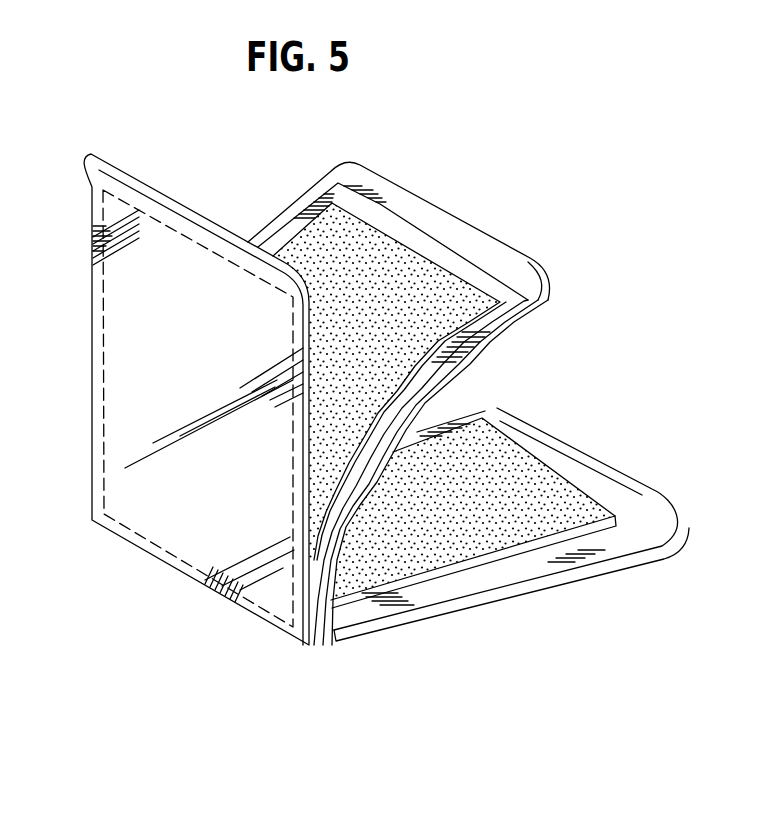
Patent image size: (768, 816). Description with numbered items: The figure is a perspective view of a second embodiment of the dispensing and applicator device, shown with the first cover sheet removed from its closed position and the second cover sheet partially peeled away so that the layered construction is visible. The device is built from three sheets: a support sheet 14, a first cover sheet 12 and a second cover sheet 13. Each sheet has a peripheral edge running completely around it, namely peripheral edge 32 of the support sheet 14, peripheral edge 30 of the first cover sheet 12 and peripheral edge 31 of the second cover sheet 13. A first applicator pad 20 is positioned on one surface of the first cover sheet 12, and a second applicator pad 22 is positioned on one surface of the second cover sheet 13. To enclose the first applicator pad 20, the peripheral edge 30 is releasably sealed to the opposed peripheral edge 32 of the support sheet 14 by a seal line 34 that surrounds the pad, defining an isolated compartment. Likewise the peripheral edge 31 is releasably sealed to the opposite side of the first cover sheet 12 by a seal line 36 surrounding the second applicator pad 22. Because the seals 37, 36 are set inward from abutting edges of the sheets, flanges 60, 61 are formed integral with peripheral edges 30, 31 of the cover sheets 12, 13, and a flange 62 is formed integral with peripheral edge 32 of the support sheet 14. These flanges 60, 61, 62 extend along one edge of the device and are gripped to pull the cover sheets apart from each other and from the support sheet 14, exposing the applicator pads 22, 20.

The first cover sheet 12 is at (351, 160).
The second cover sheet 13 is at (648, 497).
The support sheet 14 is at (127, 383).
The first applicator pad 20 is at (441, 276).
The second applicator pad 22 is at (500, 480).
The peripheral edge 30 is at (280, 222).
The peripheral edge 31 is at (588, 467).
The peripheral edge 32 is at (117, 298).
The seal line 34 is at (488, 271).
The seal line 36 is at (452, 425).
The seal 37 is at (396, 210).
The flange 60 is at (441, 220).
The flange 61 is at (620, 487).
The flange 62 is at (153, 212).